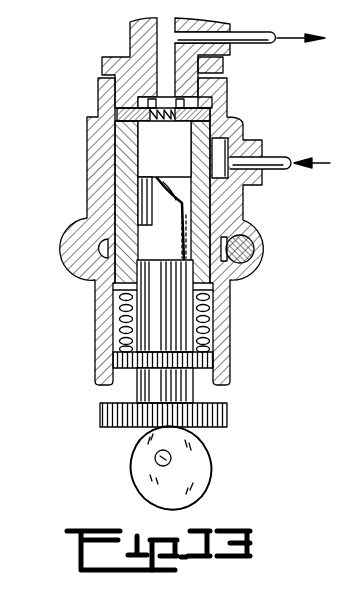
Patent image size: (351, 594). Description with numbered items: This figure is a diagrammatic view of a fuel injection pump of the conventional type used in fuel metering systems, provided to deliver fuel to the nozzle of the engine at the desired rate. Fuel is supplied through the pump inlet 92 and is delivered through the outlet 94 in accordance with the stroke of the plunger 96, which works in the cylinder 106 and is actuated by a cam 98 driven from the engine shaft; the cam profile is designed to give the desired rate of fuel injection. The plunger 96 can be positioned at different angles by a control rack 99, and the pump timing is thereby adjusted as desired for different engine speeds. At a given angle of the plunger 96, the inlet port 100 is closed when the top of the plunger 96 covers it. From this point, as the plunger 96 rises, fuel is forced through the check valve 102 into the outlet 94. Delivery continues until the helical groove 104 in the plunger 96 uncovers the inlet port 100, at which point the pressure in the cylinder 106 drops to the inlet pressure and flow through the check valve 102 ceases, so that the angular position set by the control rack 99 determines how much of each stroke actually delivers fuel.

The pump inlet 92 is at (281, 157).
The outlet 94 is at (248, 32).
The plunger 96 is at (173, 300).
The cam 98 is at (200, 462).
The control rack 99 is at (254, 239).
The inlet port 100 is at (200, 160).
The check valve 102 is at (174, 120).
The helical groove 104 is at (153, 176).
The cylinder 106 is at (145, 150).